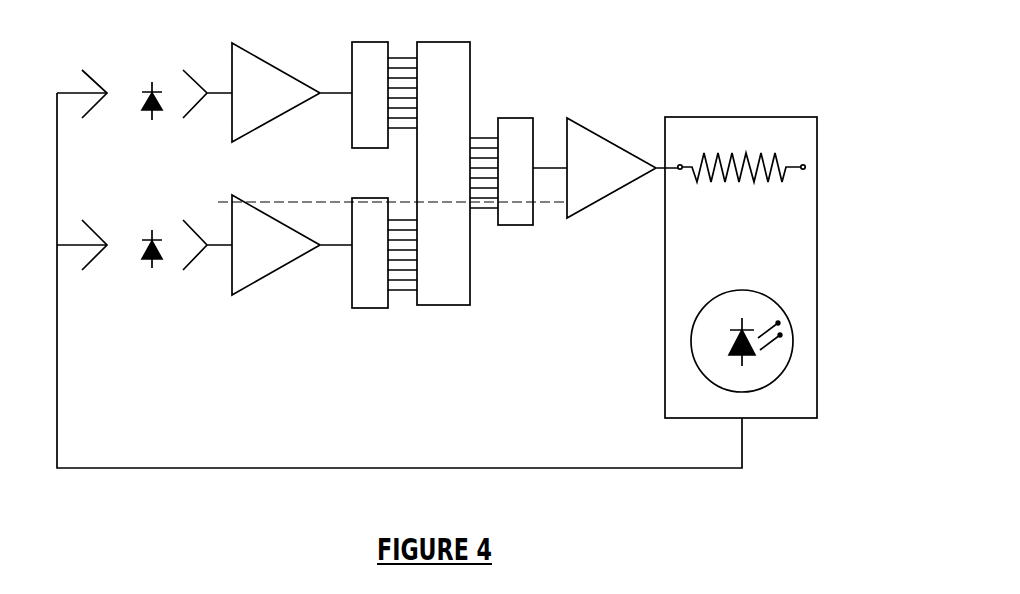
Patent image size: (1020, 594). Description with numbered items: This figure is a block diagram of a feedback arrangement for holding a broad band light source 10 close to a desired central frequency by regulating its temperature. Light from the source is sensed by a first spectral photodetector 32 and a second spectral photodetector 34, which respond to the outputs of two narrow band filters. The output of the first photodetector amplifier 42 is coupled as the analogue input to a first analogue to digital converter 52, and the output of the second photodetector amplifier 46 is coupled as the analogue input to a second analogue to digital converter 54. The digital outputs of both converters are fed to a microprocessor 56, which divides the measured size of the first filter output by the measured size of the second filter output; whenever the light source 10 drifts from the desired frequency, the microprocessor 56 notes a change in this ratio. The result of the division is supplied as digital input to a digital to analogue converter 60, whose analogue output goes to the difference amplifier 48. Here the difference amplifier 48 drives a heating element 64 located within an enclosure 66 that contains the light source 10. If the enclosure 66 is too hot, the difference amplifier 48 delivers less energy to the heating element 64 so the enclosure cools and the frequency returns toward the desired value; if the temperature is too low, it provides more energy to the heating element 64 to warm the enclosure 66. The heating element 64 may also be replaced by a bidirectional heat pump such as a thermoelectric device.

The light source 10 is at (770, 300).
The first spectral photodetector 32 is at (139, 91).
The second spectral photodetector 34 is at (147, 252).
The first photodetector amplifier 42 is at (268, 92).
The second photodetector amplifier 46 is at (253, 253).
The difference amplifier 48 is at (590, 153).
The first analogue to digital converter 52 is at (350, 128).
The second analogue to digital converter 54 is at (362, 230).
The microprocessor 56 is at (442, 102).
The digital to analogue converter 60 is at (517, 198).
The heating element 64 is at (755, 165).
The enclosure 66 is at (695, 402).